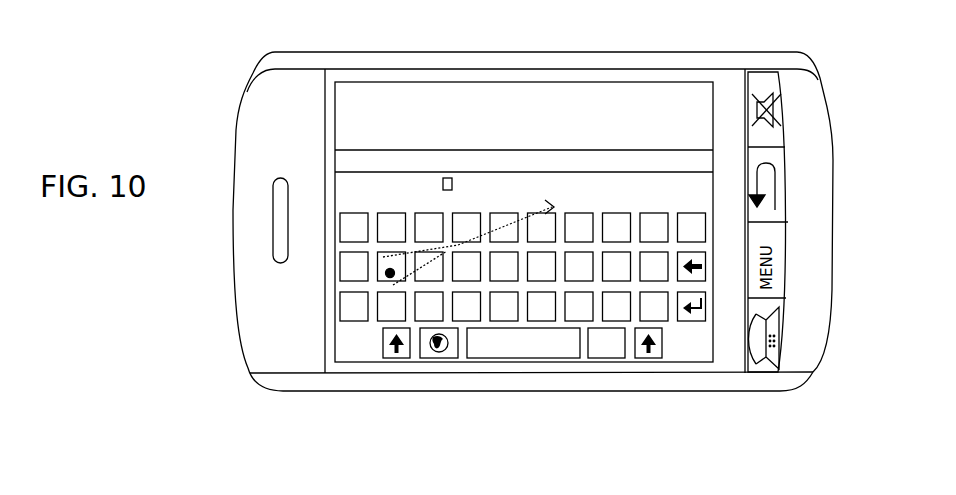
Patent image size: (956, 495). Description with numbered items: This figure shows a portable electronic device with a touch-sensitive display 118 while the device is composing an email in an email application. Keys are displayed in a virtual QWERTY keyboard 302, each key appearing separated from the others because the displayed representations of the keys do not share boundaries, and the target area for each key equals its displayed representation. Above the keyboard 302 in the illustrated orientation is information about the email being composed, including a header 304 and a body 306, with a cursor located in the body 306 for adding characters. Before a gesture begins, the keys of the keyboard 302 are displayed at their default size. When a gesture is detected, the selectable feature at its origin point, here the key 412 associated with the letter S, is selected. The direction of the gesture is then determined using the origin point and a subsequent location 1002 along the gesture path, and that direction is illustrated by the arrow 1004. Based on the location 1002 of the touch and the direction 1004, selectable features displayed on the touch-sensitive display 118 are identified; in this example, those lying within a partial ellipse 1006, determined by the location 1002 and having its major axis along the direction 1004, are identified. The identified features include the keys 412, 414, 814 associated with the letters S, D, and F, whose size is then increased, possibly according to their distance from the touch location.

The touch-sensitive display 118 is at (713, 192).
The virtual QWERTY keyboard 302 is at (677, 332).
The header 304 is at (362, 112).
The body 306 is at (382, 203).
The key 412 is at (379, 283).
The key 414 is at (434, 283).
The key 814 is at (447, 253).
The subsequent location 1002 is at (386, 273).
The arrow 1004 is at (525, 218).
The partial ellipse 1006 is at (425, 250).